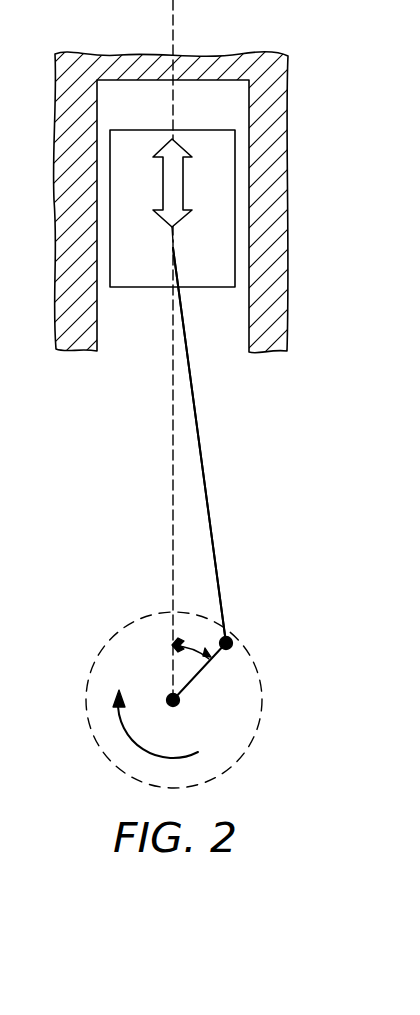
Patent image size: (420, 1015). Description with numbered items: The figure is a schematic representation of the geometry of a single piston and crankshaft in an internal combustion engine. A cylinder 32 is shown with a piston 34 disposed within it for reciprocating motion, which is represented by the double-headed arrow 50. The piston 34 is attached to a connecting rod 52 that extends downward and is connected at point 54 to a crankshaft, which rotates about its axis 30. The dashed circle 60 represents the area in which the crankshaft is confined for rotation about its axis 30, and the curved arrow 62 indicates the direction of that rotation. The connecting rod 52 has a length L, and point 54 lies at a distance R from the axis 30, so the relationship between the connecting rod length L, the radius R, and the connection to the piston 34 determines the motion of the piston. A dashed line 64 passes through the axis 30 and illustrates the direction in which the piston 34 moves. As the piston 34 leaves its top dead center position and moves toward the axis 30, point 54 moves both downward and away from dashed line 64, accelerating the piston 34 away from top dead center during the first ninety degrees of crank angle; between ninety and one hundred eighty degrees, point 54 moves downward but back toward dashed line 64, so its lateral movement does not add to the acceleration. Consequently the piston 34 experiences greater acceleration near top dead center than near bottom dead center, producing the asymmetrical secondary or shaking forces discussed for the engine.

The crankshaft axis 30 is at (166, 695).
The cylinder 32 is at (249, 112).
The piston 34 is at (157, 130).
The arrow 50 is at (183, 190).
The connecting rod 52 is at (207, 474).
The connection point 54 is at (232, 641).
The dashed circle 60 is at (253, 740).
The arrow 62 is at (147, 752).
The dashed line 64 is at (172, 547).
The connecting rod length L is at (213, 545).
The crank radius R is at (200, 677).